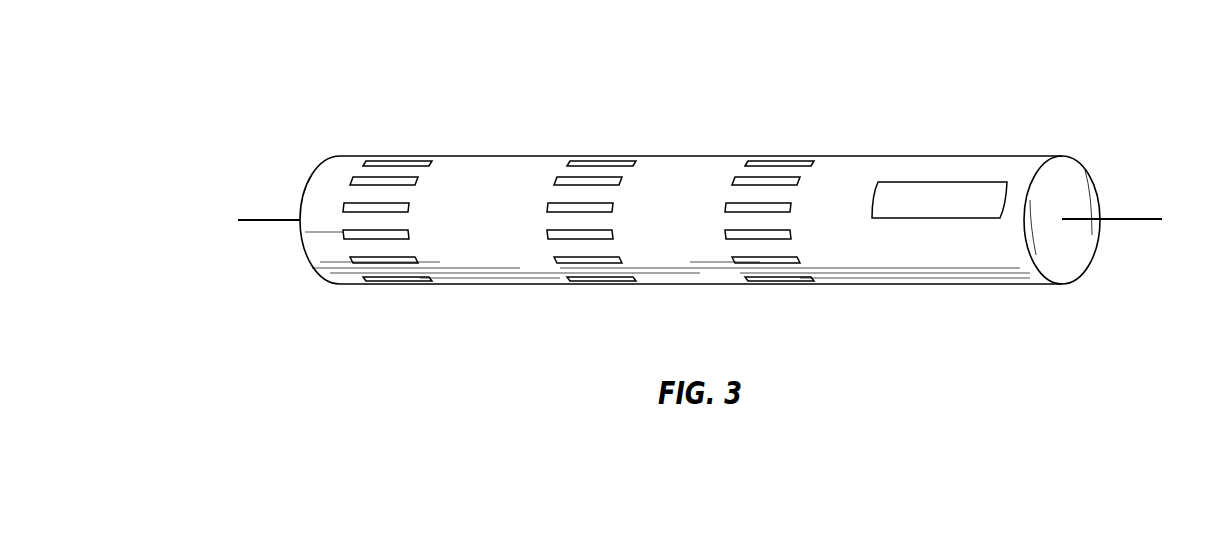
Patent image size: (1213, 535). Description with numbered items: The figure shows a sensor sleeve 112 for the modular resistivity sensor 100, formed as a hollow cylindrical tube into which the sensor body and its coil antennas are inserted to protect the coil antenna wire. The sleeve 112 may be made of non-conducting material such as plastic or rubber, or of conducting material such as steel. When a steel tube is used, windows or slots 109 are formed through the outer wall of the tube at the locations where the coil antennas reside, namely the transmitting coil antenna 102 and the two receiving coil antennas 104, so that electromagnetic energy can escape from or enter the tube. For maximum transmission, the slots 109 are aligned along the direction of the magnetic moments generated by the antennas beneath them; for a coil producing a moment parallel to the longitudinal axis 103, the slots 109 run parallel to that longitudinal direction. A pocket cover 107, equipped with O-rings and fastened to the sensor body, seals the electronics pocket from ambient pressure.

The modular resistivity sensor 100 is at (1079, 71).
The transmitting coil antenna 102 is at (398, 298).
The longitudinal axis 103 is at (1127, 218).
The receiving coil antennas 104 is at (603, 298).
The pocket cover 107 is at (945, 182).
The slots 109 is at (588, 177).
The sensor sleeve 112 is at (508, 156).